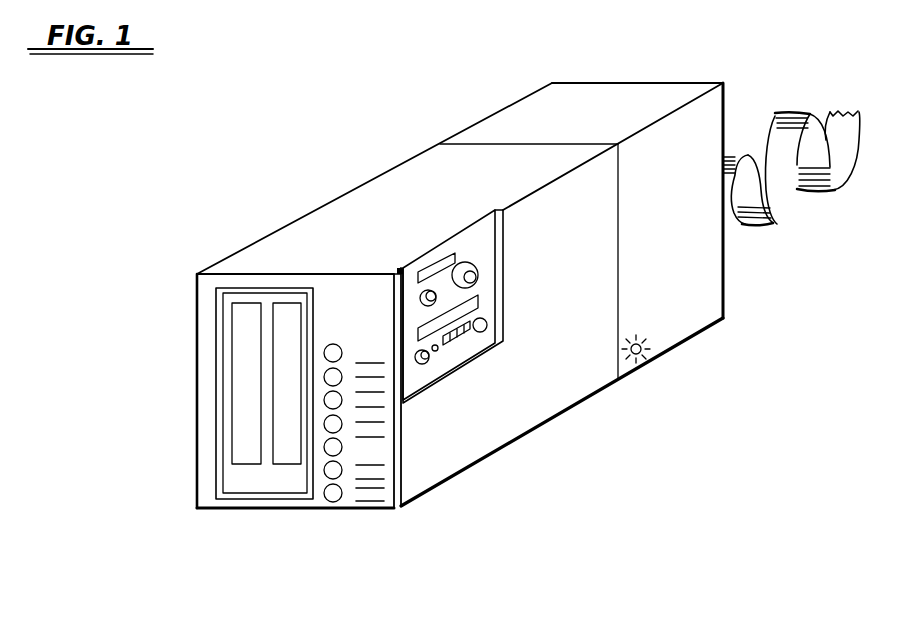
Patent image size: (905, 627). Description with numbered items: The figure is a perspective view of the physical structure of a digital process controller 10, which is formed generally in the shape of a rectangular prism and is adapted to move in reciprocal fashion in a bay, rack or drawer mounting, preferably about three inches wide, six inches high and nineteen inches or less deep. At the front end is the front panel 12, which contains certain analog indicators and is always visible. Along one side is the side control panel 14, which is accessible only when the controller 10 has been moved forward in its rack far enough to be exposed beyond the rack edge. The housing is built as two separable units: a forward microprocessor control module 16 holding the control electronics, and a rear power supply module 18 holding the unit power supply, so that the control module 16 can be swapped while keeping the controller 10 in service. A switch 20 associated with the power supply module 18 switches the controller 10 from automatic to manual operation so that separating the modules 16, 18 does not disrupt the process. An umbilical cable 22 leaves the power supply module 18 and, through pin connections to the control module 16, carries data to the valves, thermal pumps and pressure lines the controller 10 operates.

The digital process controller 10 is at (221, 199).
The front panel 12 is at (318, 512).
The side control panel 14 is at (493, 279).
The microprocessor control module 16 is at (492, 423).
The power supply module 18 is at (693, 283).
The switch 20 is at (643, 352).
The umbilical cable 22 is at (753, 224).